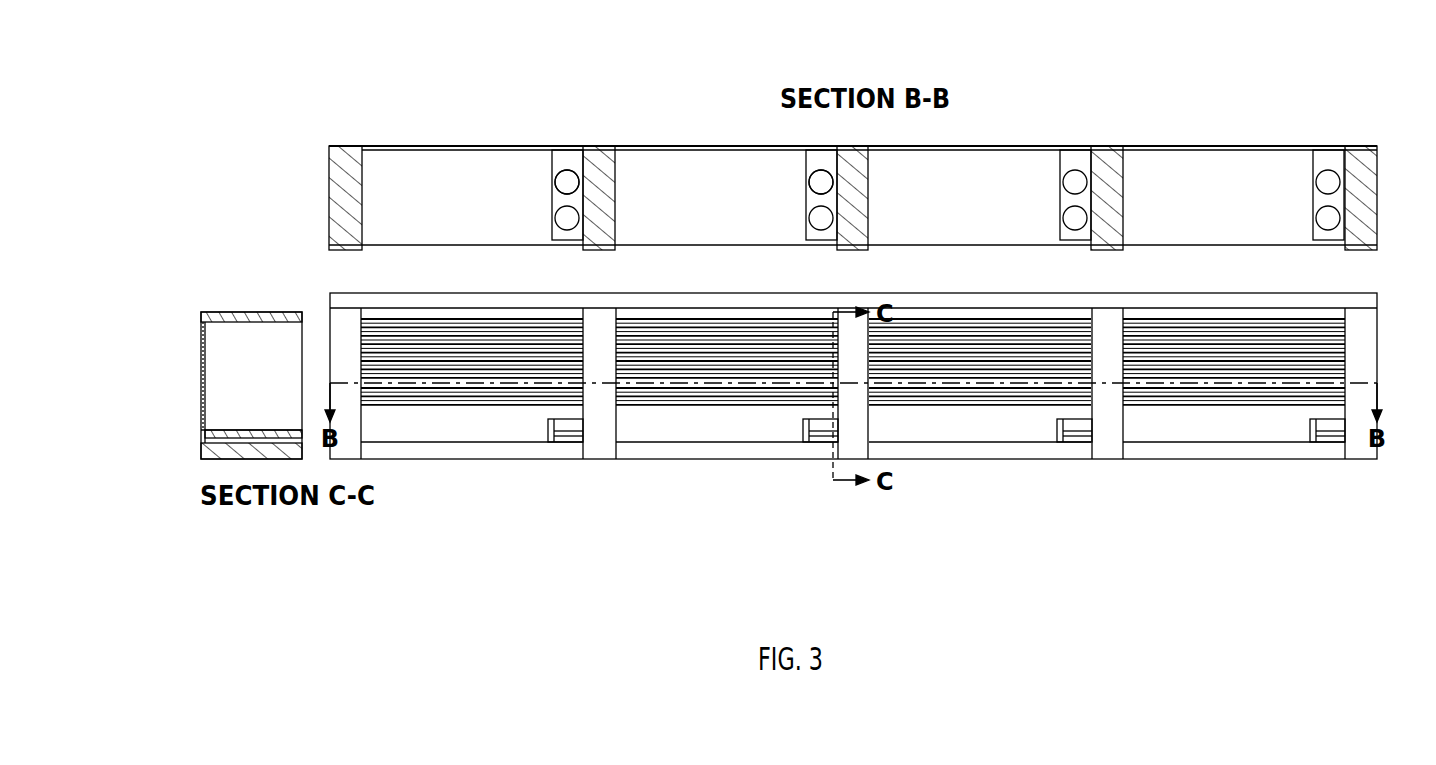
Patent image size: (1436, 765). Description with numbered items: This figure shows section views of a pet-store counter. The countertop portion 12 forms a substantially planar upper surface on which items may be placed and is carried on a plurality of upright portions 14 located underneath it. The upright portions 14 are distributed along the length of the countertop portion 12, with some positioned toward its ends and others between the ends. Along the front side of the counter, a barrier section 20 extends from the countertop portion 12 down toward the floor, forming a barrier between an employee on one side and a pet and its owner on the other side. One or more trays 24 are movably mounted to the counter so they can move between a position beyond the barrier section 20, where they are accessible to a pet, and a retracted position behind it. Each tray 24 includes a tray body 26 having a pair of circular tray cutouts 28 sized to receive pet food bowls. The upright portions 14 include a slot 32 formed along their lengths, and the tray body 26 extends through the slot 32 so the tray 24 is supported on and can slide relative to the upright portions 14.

The countertop portion 12 is at (225, 312).
The upright portions 14 is at (329, 207).
The barrier section 20 is at (480, 146).
The trays 24 is at (557, 233).
The tray body 26 is at (559, 165).
The tray cutouts 28 is at (822, 182).
The slot 32 is at (225, 440).